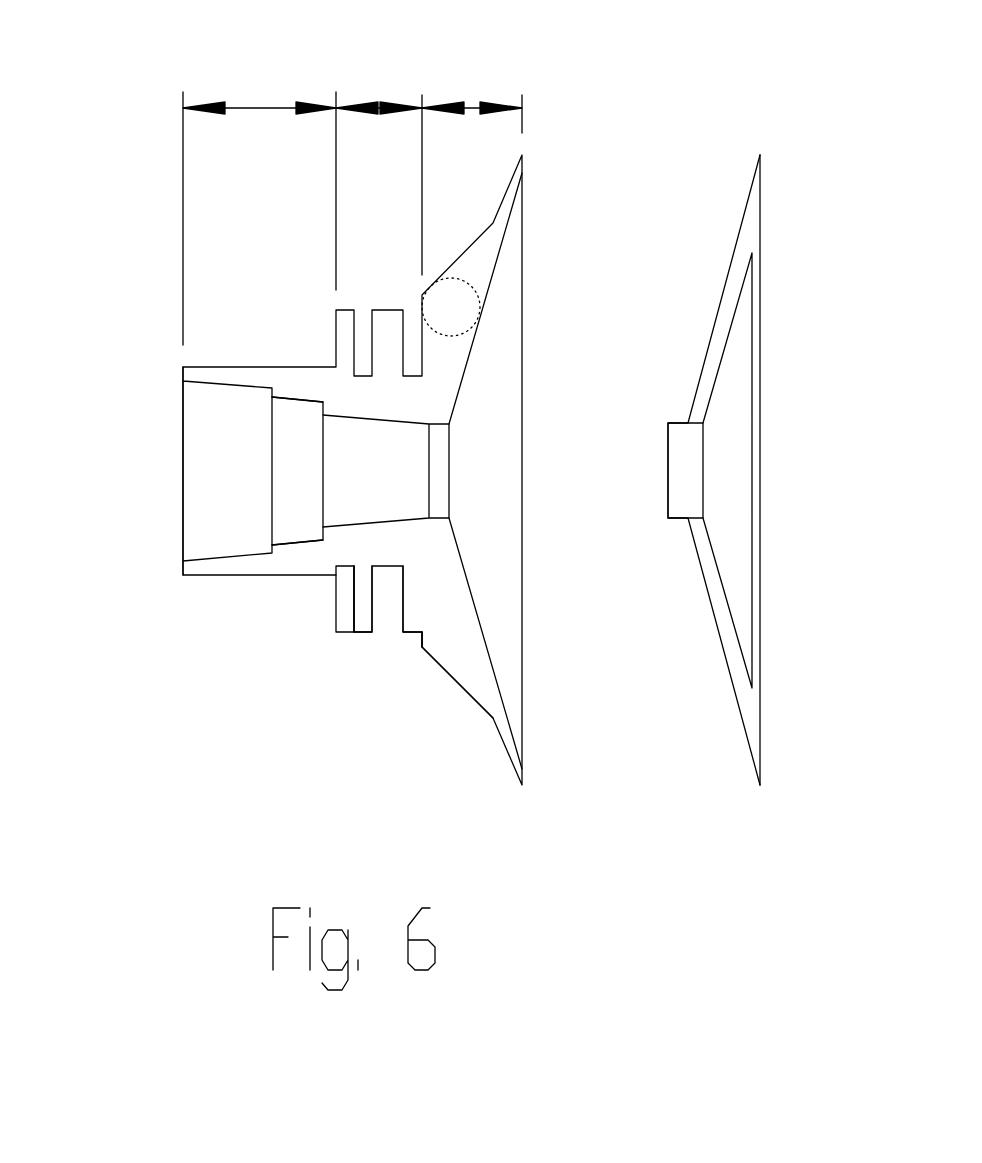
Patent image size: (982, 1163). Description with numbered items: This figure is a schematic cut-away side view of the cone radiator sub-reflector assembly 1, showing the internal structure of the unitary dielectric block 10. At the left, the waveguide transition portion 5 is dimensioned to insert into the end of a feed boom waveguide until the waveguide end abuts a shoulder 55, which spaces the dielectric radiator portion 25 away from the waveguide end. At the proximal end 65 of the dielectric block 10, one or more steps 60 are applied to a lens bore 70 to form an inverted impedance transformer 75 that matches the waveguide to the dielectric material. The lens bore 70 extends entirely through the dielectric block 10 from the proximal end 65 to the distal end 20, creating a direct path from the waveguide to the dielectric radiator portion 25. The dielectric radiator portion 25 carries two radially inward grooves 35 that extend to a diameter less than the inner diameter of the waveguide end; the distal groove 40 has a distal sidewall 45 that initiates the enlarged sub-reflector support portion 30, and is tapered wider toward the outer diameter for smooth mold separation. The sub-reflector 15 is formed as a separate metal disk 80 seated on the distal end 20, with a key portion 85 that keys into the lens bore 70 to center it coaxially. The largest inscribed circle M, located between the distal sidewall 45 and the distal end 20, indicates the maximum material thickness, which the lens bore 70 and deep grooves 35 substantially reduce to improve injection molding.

The cone radiator sub-reflector assembly 1 is at (178, 613).
The waveguide transition portion 5 is at (262, 106).
The unitary dielectric block 10 is at (318, 378).
The sub-reflector 15 is at (713, 323).
The distal end 20 is at (732, 470).
The dielectric radiator portion 25 is at (380, 106).
The sub-reflector support portion 30 is at (473, 104).
The grooves 35 is at (362, 620).
The distal groove 40 is at (412, 618).
The distal sidewall 45 is at (422, 640).
The shoulder 55 is at (336, 605).
The step 60 is at (283, 542).
The proximal end 65 is at (155, 472).
The lens bore 70 is at (403, 473).
The inverted impedance transformer 75 is at (292, 447).
The metal disk 80 is at (735, 400).
The key portion 85 is at (630, 468).
The largest diameter inscribed circle M is at (473, 287).